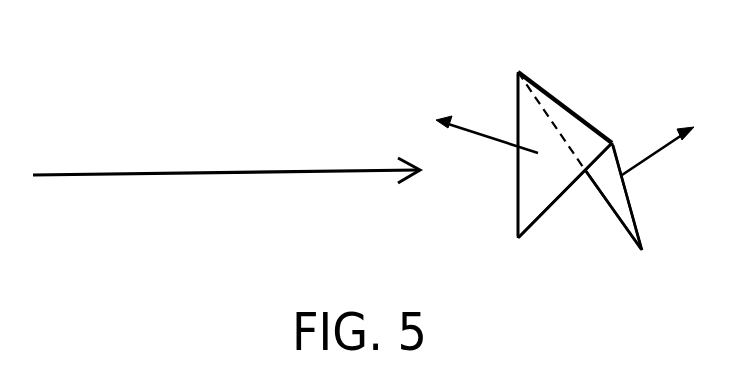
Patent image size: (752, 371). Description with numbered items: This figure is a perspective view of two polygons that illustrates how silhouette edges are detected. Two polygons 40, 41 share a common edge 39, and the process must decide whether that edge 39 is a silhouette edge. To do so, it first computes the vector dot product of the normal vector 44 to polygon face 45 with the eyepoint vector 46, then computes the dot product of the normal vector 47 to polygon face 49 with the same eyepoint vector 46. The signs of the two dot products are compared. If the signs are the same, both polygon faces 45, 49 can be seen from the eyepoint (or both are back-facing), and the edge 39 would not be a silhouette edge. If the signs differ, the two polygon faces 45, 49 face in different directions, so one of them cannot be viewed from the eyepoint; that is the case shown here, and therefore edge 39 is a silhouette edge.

The edge 39 is at (553, 100).
The polygon 40 is at (517, 98).
The polygon 41 is at (631, 208).
The normal vector 44 is at (475, 134).
The polygon face 45 is at (542, 198).
The eyepoint vector 46 is at (236, 176).
The normal vector 47 is at (663, 150).
The polygon face 49 is at (618, 195).